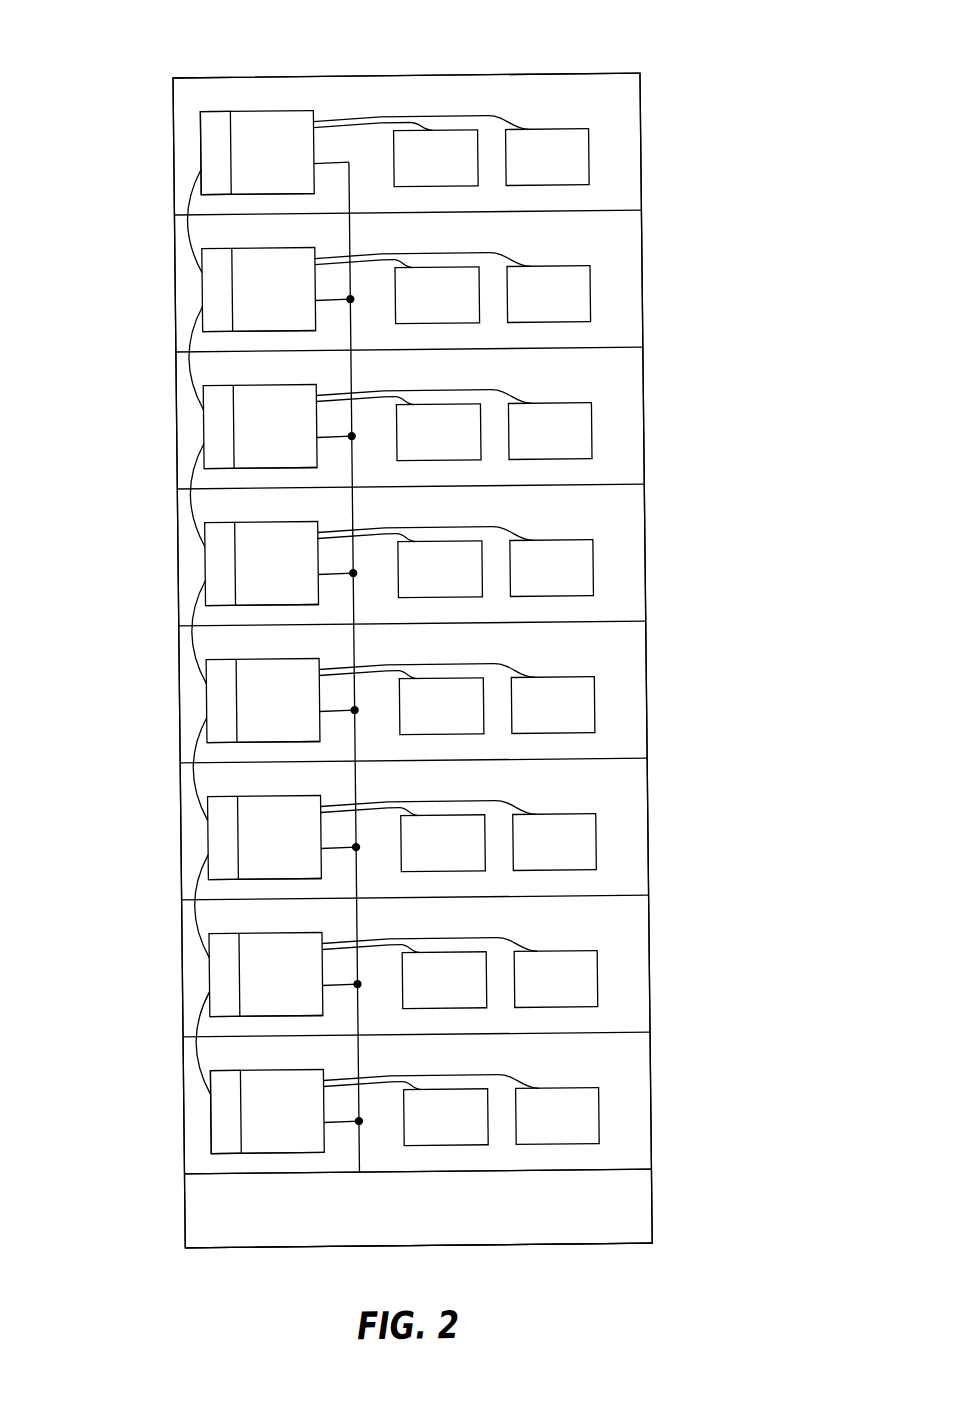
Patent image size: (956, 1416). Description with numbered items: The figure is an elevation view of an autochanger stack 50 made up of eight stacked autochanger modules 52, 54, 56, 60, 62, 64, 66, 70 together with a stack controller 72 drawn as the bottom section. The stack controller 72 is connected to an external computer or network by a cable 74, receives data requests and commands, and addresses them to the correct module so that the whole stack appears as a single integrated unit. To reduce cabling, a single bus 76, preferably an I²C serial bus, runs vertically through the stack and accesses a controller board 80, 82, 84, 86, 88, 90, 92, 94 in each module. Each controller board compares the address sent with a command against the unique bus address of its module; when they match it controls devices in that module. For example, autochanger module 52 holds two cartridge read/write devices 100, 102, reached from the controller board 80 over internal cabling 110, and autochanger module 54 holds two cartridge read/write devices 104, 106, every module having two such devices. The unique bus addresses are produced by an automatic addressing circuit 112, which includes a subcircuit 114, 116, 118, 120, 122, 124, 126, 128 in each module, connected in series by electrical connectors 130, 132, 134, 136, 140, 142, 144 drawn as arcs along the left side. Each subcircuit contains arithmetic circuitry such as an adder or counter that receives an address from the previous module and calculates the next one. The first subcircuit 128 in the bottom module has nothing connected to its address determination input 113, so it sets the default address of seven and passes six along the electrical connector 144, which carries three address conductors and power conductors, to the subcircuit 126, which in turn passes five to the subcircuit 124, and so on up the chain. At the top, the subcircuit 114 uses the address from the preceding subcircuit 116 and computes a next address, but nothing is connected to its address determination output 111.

The autochanger stack 50 is at (658, 45).
The autochanger module 52 is at (640, 150).
The autochanger module 54 is at (640, 287).
The autochanger module 56 is at (640, 424).
The autochanger module 60 is at (640, 561).
The autochanger module 62 is at (640, 698).
The autochanger module 64 is at (640, 835).
The autochanger module 66 is at (640, 972).
The first autochanger module 70 is at (640, 1109).
The stack controller 72 is at (640, 1210).
The cable 74 is at (173, 1217).
The bus 76 is at (348, 1165).
The controller board 80 is at (244, 196).
The controller board 82 is at (244, 333).
The controller board 84 is at (244, 470).
The controller board 86 is at (244, 607).
The controller board 88 is at (244, 744).
The controller board 90 is at (244, 881).
The controller board 92 is at (244, 1018).
The controller board 94 is at (244, 1155).
The cartridge read/write device 100 is at (420, 125).
The cartridge read/write device 102 is at (537, 128).
The cartridge read/write device 104 is at (420, 262).
The cartridge read/write device 106 is at (537, 265).
The internal cabling 110 is at (332, 123).
The address determination output 111 is at (200, 128).
The automatic addressing circuit 112 is at (214, 94).
The address determination input 113 is at (200, 1137).
The subcircuit 114 is at (200, 157).
The subcircuit 116 is at (200, 291).
The subcircuit 118 is at (200, 428).
The subcircuit 120 is at (200, 565).
The subcircuit 122 is at (200, 702).
The subcircuit 124 is at (200, 839).
The subcircuit 126 is at (200, 976).
The first subcircuit 128 is at (200, 1113).
The electrical connector 130 is at (186, 229).
The electrical connector 132 is at (186, 366).
The electrical connector 134 is at (186, 503).
The electrical connector 136 is at (186, 640).
The electrical connector 140 is at (186, 777).
The electrical connector 142 is at (186, 914).
The electrical connector 144 is at (186, 1051).